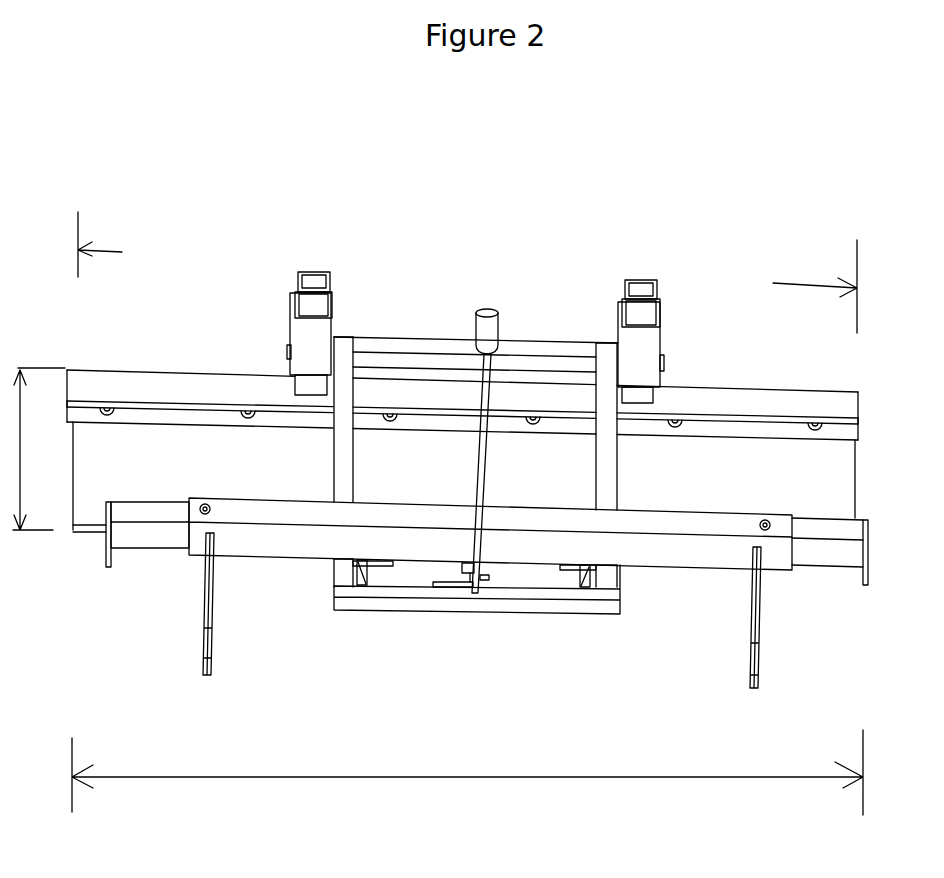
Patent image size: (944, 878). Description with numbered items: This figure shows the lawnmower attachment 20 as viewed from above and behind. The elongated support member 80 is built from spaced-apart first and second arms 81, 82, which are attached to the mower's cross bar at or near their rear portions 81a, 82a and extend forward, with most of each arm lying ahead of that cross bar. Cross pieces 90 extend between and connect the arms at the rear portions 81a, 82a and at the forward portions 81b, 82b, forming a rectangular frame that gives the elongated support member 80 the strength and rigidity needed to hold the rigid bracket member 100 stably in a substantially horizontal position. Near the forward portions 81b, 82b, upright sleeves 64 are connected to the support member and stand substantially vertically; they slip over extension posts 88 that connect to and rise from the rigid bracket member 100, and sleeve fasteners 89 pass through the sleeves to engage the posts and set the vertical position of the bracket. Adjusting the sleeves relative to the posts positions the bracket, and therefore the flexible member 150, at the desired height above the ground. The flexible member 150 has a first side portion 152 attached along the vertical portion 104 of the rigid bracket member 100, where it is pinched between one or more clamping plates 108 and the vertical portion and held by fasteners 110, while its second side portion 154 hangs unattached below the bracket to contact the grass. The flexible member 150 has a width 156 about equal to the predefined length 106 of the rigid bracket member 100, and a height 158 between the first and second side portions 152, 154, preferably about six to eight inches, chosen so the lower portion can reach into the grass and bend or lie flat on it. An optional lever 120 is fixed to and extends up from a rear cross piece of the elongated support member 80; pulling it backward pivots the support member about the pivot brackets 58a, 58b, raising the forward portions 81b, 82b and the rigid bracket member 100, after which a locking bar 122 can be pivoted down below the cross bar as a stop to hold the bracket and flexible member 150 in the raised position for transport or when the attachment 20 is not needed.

The attachment 20 is at (190, 160).
The predefined length 106 is at (105, 250).
The height 158 is at (22, 477).
The width 156 is at (183, 778).
The rigid bracket member 100 is at (733, 403).
The clamping plate 108 is at (182, 417).
The fastener 110 is at (107, 415).
The vertical portion 104 is at (67, 403).
The first side portion 152 is at (852, 448).
The flexible member 150 is at (820, 478).
The second side portion 154 is at (83, 512).
The elongated support member 80 is at (477, 473).
The second arm 82 is at (345, 455).
The first arm 81 is at (608, 457).
The cross piece 90 is at (547, 345).
The forward portion of second arm 82b is at (345, 367).
The forward portion of first arm 81b is at (605, 368).
The rear portion of second arm 82a is at (342, 572).
The rear portion of first arm 81a is at (607, 575).
The pivot bracket 58b is at (368, 567).
The pivot bracket 58a is at (583, 572).
The lever 120 is at (485, 463).
The locking bar 122 is at (466, 571).
The extension post 88 is at (318, 278).
The upright sleeve 64 is at (302, 328).
The sleeve fastener 89 is at (289, 352).